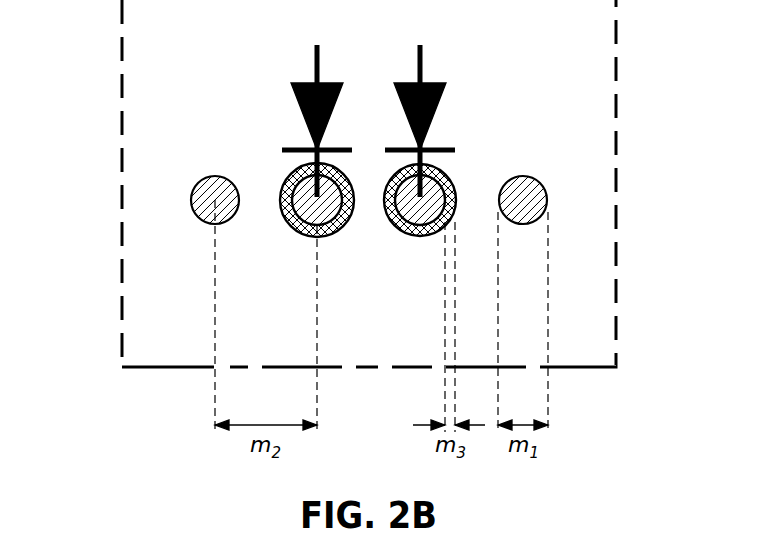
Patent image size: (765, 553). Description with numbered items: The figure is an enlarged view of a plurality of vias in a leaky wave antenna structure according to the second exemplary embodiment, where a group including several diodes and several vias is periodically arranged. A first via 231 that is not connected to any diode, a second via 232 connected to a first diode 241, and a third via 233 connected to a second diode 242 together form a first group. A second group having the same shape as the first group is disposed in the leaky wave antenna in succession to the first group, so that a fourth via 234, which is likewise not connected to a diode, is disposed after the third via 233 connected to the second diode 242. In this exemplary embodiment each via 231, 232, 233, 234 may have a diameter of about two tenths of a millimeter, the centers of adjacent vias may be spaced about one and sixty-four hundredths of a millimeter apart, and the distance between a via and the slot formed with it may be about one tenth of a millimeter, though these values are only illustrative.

The first via 231 is at (190, 198).
The second via 232 is at (290, 222).
The third via 233 is at (420, 236).
The fourth via 234 is at (534, 172).
The first diode 241 is at (307, 120).
The second diode 242 is at (433, 118).